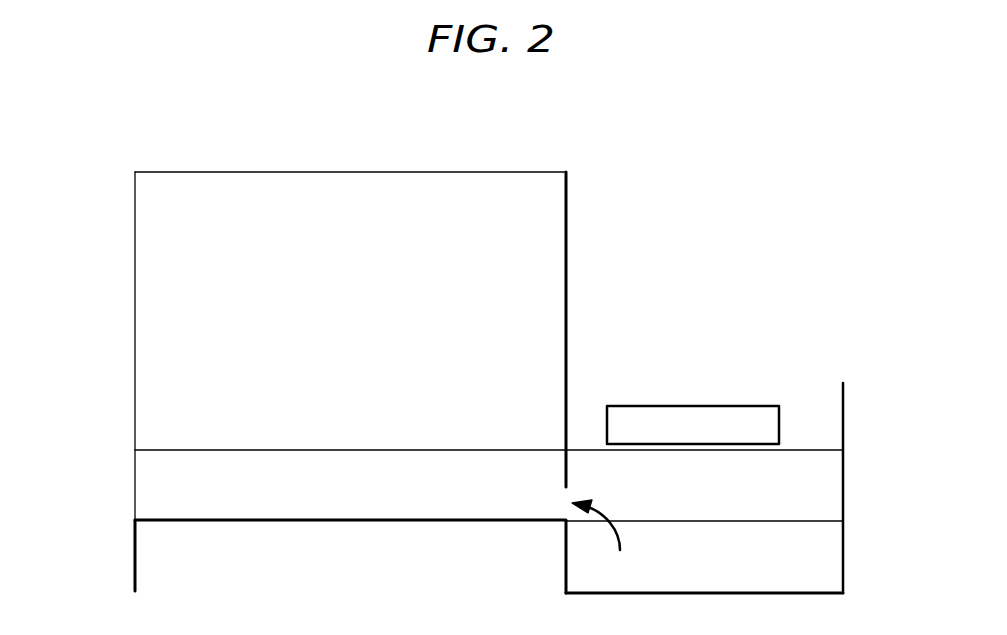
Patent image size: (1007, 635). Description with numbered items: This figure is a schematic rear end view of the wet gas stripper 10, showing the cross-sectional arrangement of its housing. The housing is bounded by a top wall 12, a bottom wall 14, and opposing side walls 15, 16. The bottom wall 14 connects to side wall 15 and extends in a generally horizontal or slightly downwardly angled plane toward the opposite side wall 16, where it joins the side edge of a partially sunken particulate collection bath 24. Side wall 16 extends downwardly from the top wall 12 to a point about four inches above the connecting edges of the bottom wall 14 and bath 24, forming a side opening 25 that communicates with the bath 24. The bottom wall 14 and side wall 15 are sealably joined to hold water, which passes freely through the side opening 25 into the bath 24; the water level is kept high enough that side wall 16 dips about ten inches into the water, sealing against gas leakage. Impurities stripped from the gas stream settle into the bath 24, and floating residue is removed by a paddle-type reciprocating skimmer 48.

The gas stripper 10 is at (126, 116).
The top wall 12 is at (350, 172).
The bottom wall 14 is at (353, 520).
The side wall 15 is at (135, 312).
The side wall 16 is at (568, 313).
The particulate collection bath 24 is at (845, 461).
The side opening 25 is at (601, 541).
The skimmer 48 is at (692, 406).